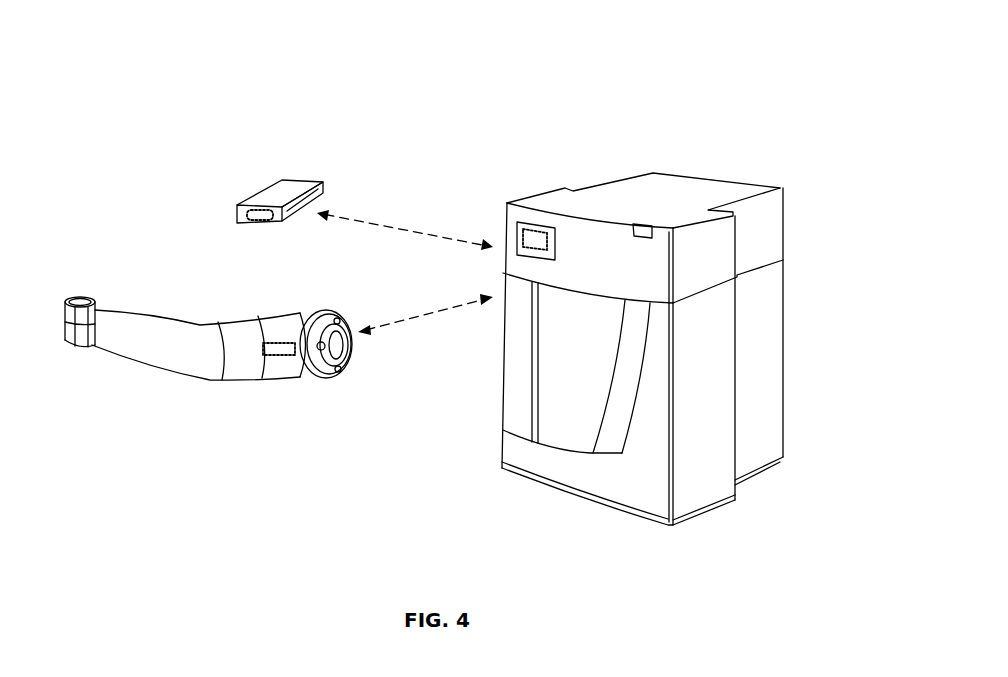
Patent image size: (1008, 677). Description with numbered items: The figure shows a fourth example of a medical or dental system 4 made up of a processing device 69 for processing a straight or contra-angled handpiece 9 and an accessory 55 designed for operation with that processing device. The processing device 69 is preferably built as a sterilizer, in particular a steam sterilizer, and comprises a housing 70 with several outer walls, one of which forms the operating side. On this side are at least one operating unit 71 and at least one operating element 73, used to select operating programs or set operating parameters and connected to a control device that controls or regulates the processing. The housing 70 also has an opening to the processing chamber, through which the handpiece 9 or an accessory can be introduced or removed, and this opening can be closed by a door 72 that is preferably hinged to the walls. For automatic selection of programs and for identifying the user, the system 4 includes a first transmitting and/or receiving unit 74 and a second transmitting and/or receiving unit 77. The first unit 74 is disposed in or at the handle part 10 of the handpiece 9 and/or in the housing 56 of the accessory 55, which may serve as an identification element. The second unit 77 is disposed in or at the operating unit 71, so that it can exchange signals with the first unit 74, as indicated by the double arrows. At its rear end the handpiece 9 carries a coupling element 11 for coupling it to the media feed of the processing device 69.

The medical or dental system 4 is at (831, 62).
The straight handpiece or contra-angled handpiece 9 is at (210, 349).
The handle part 10 is at (185, 353).
The coupling element 11 is at (323, 365).
The accessory 55 is at (278, 192).
The housing 56 is at (293, 205).
The processing device 69 is at (768, 332).
The housing 70 is at (600, 203).
The operating unit 71 is at (517, 233).
The door 72 is at (557, 405).
The operating element 73 is at (643, 228).
The first transmitting and/or receiving unit 74 is at (250, 212).
The second transmitting and/or receiving unit 77 is at (538, 238).